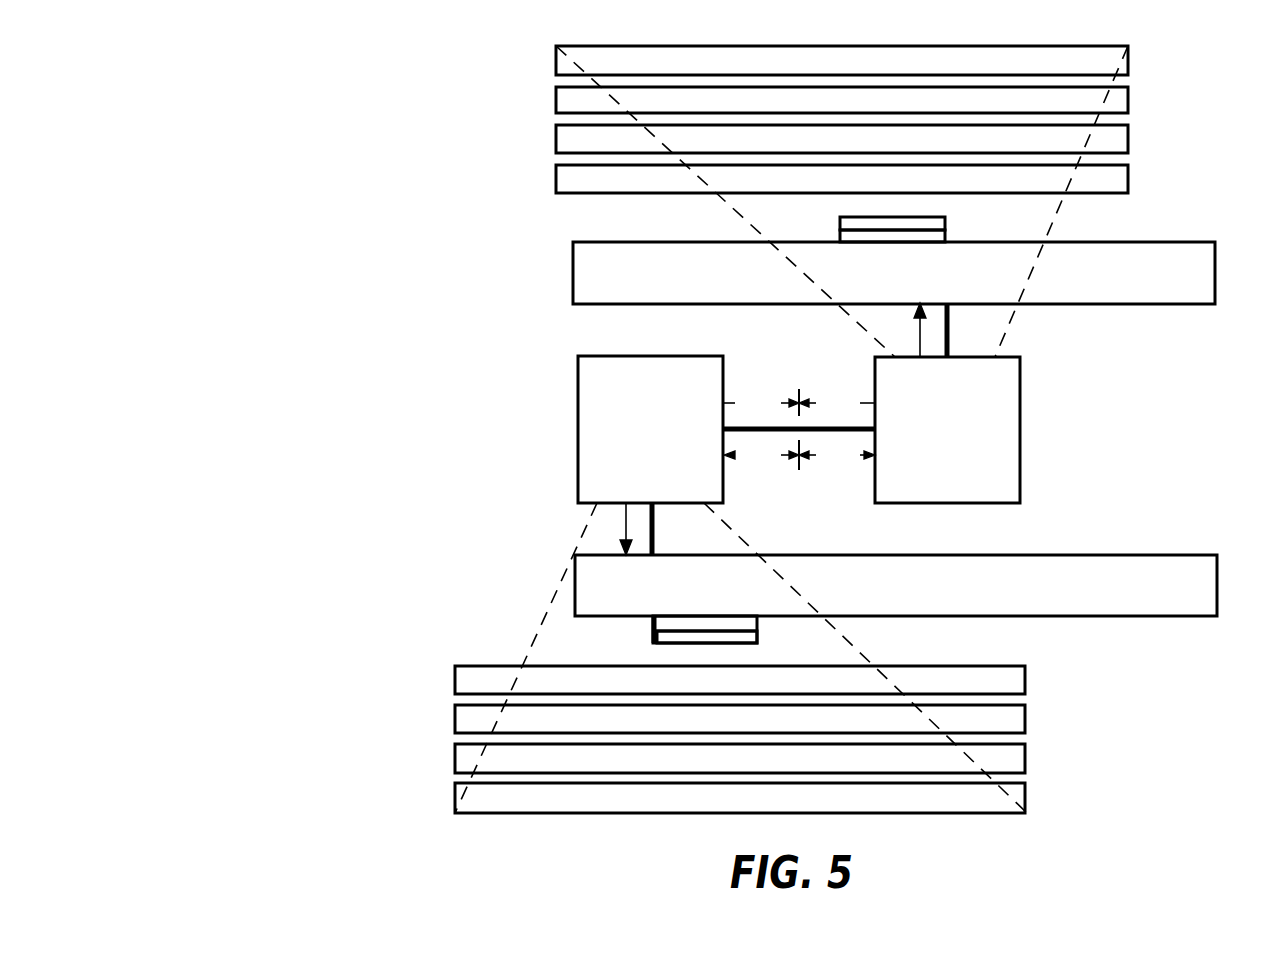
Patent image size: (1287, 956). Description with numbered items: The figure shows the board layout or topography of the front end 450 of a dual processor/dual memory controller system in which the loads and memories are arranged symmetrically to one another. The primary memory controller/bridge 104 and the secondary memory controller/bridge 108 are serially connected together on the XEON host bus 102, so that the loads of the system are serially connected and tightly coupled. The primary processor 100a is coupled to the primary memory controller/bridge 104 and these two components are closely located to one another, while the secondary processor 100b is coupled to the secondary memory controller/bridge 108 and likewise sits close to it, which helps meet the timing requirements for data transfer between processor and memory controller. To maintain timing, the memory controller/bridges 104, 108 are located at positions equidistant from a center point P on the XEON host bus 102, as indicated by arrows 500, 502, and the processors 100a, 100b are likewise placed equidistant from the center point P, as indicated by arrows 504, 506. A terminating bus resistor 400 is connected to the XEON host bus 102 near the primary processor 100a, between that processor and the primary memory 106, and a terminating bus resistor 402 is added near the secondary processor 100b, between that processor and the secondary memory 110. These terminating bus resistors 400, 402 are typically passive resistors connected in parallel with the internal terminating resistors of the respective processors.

The front end 450 is at (390, 144).
The secondary memory 110 is at (1153, 45).
The terminating bus resistor 402 is at (840, 217).
The XEON host bus 102 is at (947, 233).
The secondary processor 100b is at (1215, 280).
The primary memory controller/bridge 104 is at (578, 428).
The secondary memory controller/bridge 108 is at (1020, 428).
The arrow 504 is at (761, 402).
The arrow 506 is at (837, 404).
The center point P is at (802, 424).
The arrow 500 is at (761, 455).
The arrow 502 is at (837, 456).
The primary processor 100a is at (1217, 585).
The terminating bus resistor 400 is at (757, 625).
The primary memory 106 is at (1050, 663).